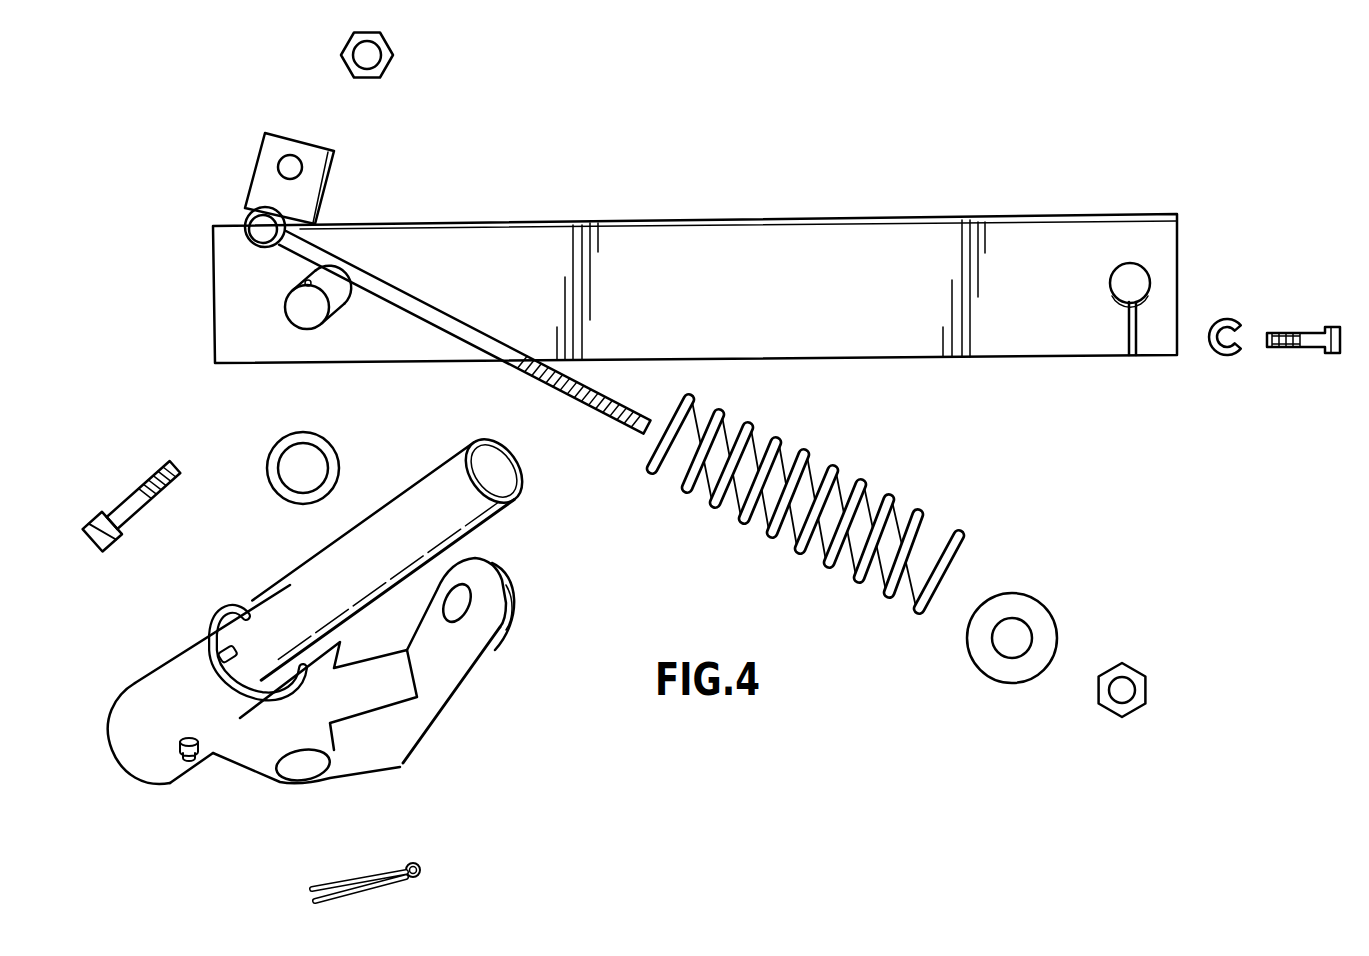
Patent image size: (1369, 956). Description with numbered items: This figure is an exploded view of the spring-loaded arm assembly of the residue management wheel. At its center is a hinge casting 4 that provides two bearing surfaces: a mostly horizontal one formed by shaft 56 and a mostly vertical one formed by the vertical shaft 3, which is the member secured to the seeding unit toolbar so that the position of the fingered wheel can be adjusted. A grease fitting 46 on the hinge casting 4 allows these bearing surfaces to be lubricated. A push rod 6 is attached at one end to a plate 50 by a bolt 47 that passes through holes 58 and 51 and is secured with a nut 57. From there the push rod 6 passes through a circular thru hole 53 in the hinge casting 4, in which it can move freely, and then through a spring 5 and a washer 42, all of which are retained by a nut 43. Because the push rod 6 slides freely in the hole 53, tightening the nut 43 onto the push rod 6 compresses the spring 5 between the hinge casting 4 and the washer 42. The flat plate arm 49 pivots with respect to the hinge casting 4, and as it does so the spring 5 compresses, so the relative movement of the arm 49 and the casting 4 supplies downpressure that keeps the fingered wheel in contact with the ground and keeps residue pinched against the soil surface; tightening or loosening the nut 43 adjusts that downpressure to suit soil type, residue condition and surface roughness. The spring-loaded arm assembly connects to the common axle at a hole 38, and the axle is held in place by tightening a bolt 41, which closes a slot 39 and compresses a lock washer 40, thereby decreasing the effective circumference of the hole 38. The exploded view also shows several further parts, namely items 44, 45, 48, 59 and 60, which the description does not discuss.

The vertical shaft 3 is at (505, 475).
The hinge casting 4 is at (341, 703).
The spring 5 is at (888, 490).
The push rod 6 is at (480, 322).
The hole 38 is at (1150, 275).
The slot 39 is at (1128, 330).
The lock washer 40 is at (1225, 356).
The bolt 41 is at (1300, 332).
The washer 42 is at (1028, 598).
The nut 43 is at (1122, 663).
The cotter pin 44 is at (383, 872).
The hole 45 is at (302, 780).
The grease fitting 46 is at (186, 762).
The bolt 47 is at (132, 492).
The washer 48 is at (282, 443).
The flat plate arm 49 is at (655, 242).
The plate 50 is at (260, 176).
The hole 51 is at (292, 156).
The thru hole 53 is at (518, 630).
The shaft 56 is at (310, 330).
The nut 57 is at (393, 50).
The hole 58 is at (245, 232).
The spring clip 59 is at (216, 636).
The tab 60 is at (216, 658).